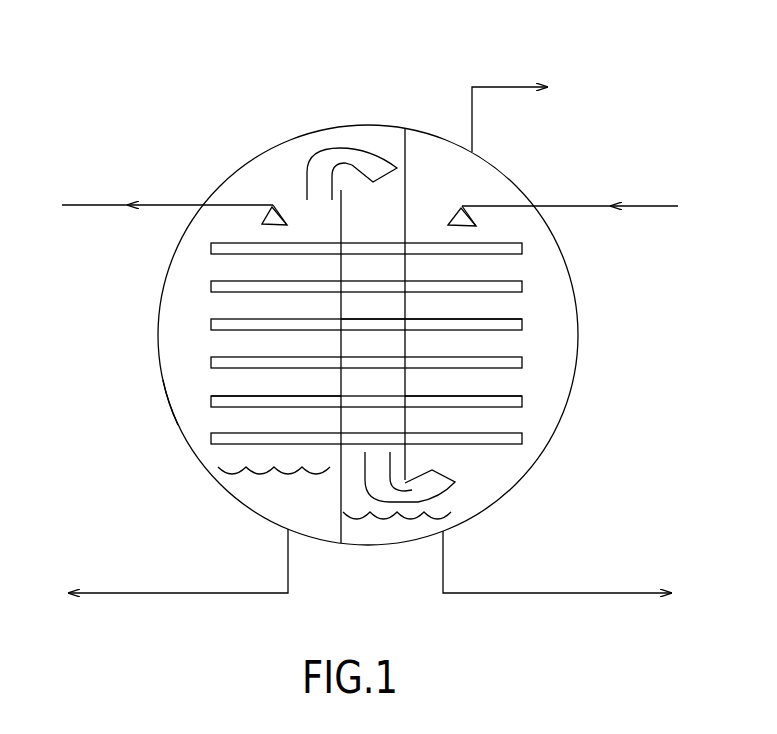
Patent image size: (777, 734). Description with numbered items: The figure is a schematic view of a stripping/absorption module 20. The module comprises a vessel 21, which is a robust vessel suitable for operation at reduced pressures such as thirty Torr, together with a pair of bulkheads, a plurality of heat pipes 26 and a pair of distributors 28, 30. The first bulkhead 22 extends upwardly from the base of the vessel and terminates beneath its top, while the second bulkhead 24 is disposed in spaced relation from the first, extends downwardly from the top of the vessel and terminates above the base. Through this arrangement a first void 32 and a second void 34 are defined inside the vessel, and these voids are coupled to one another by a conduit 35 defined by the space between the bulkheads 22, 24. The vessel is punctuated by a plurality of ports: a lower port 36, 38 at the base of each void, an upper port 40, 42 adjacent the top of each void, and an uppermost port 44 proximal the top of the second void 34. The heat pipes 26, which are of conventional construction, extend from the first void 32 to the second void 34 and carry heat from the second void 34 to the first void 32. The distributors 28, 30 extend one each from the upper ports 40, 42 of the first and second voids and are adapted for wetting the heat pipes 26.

The stripping/absorption module 20 is at (272, 150).
The vessel 21 is at (169, 402).
The first bulkhead 22 is at (322, 495).
The second bulkhead 24 is at (420, 167).
The heat pipes 26 is at (213, 317).
The distributor 28 is at (247, 195).
The distributor 30 is at (483, 197).
The first void 32 is at (276, 382).
The second void 34 is at (463, 382).
The conduit 35 is at (431, 310).
The lower port 36 is at (282, 535).
The lower port 38 is at (452, 531).
The upper port 40 is at (195, 197).
The upper port 42 is at (538, 190).
The uppermost port 44 is at (462, 140).